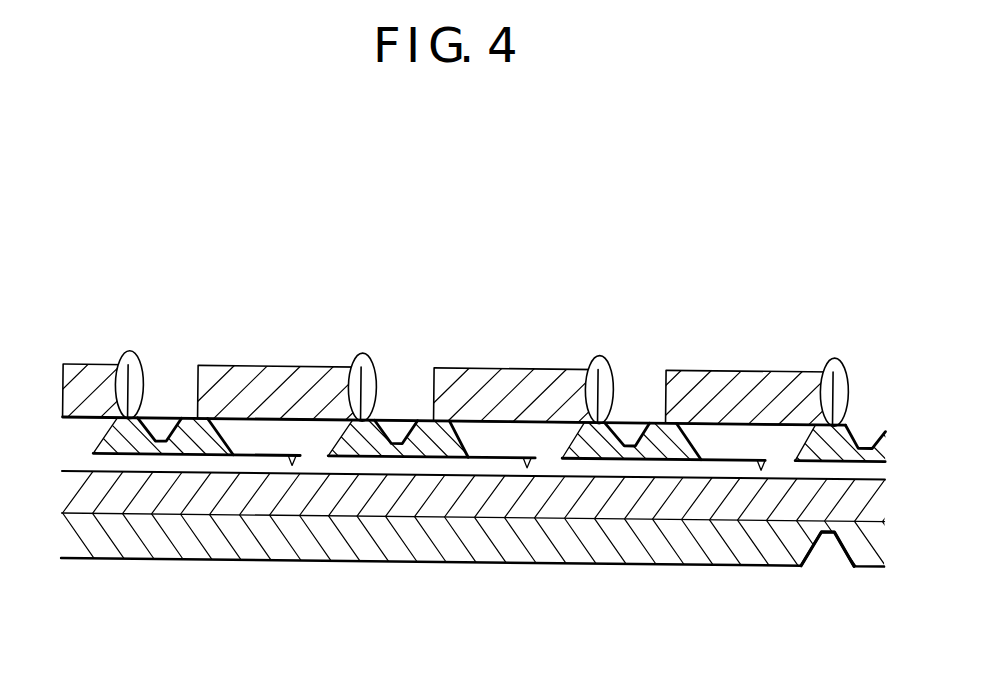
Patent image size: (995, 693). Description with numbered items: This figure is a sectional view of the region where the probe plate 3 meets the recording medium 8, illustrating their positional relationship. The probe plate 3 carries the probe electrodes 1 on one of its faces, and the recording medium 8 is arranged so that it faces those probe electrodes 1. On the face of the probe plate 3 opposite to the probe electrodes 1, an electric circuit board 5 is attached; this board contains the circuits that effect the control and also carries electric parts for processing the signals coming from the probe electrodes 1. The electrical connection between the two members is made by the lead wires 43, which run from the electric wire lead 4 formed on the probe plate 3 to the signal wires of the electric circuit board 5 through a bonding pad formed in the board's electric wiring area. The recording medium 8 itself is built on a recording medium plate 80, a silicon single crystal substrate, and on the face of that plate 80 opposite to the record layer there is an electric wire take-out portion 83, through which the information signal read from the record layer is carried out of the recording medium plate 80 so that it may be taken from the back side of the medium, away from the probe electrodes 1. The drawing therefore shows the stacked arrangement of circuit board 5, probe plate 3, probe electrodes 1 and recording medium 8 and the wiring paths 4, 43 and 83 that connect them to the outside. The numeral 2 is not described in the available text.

The probe electrode 1 is at (295, 460).
The wiring pattern 2 is at (245, 455).
The probe plate 3 is at (188, 442).
The electric wire lead 4 is at (400, 428).
The electric circuit board 5 is at (511, 378).
The lead wire 43 is at (363, 350).
The recording medium 8 is at (595, 503).
The recording medium plate 80 is at (668, 543).
The electric wire take-out portion 83 is at (825, 542).